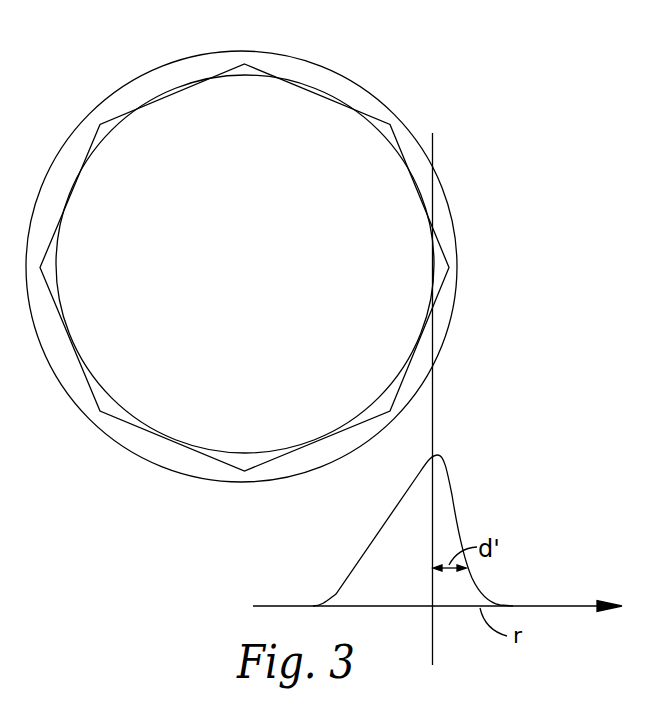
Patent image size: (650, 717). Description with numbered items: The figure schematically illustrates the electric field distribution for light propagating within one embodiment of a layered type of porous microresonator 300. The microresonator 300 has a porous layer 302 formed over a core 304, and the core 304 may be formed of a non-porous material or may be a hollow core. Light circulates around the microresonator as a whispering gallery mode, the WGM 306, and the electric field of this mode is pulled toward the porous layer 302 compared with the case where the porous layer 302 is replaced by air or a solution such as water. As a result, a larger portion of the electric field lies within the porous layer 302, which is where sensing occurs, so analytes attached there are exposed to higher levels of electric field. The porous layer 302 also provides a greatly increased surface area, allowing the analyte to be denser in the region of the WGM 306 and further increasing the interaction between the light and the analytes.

The porous microresonator 300 is at (297, 258).
The porous layer 302 is at (123, 91).
The core 304 is at (308, 105).
The WGM 306 is at (443, 249).